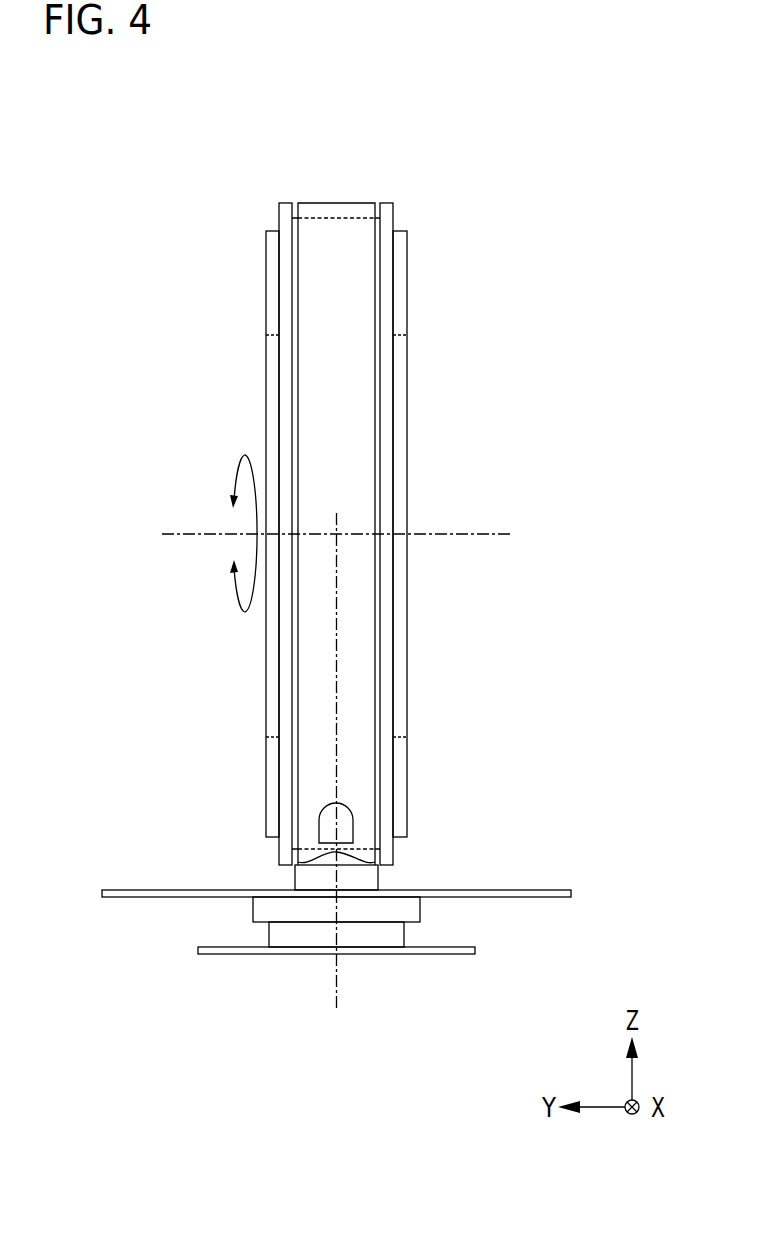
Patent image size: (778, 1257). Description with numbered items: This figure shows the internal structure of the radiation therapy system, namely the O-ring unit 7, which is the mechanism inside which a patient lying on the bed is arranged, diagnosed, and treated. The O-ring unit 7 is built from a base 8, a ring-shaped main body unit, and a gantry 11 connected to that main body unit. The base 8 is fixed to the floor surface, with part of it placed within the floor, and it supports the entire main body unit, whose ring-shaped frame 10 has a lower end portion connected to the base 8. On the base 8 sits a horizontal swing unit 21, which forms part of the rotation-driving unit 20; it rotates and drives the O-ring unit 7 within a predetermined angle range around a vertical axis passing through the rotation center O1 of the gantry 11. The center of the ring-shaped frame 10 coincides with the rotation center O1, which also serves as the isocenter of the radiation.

The O-ring unit 7 is at (490, 138).
The ring-shaped frame 10 is at (334, 202).
The gantry 11 is at (285, 202).
The rotation center O1 is at (443, 532).
The base 8 is at (404, 936).
The horizontal swing unit 21 is at (336, 922).
The rotation-driving unit 20 is at (336, 950).